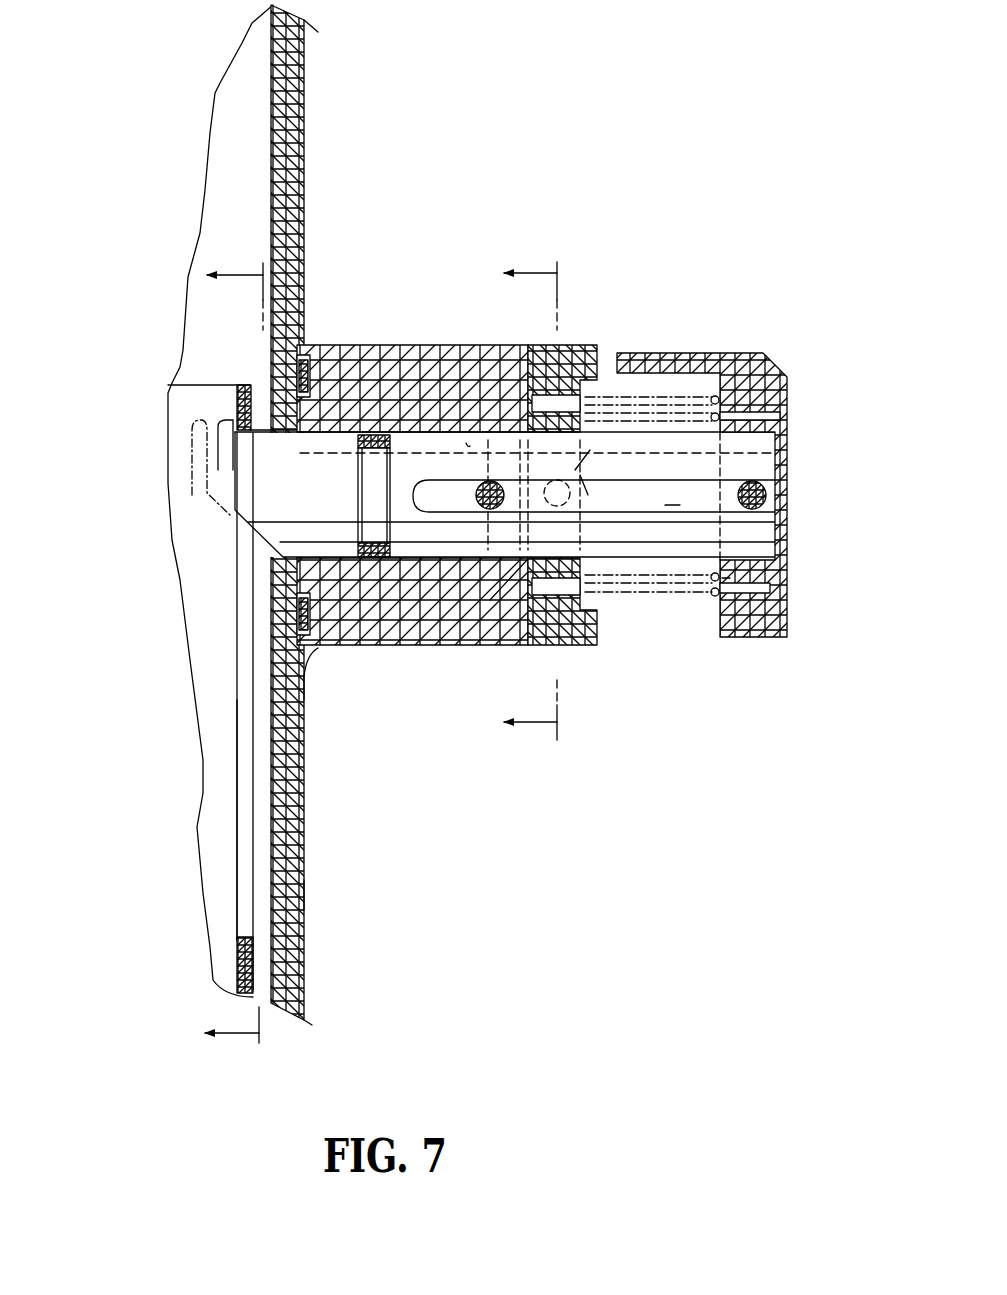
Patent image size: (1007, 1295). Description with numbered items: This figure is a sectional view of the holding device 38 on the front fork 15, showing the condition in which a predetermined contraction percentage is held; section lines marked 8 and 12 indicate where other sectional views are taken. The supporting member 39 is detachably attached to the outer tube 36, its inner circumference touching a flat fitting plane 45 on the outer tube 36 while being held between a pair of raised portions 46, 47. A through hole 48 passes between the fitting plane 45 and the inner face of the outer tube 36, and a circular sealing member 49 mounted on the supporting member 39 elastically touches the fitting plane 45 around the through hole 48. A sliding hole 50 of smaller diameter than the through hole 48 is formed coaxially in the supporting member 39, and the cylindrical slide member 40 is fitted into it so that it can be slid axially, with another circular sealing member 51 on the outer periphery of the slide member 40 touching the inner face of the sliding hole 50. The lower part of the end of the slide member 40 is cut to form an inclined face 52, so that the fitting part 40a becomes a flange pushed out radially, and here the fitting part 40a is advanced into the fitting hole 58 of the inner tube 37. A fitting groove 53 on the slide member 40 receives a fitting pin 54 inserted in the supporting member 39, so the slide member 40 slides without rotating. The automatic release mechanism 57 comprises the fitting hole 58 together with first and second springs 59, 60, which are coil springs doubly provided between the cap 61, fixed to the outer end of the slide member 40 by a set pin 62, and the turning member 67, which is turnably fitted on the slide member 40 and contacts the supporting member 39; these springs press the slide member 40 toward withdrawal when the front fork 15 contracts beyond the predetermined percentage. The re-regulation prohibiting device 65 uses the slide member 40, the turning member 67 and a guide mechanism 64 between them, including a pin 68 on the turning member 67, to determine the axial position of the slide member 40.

The front fork 15 is at (315, 895).
The outer tube 36 is at (300, 115).
The inner tube 37 is at (237, 960).
The holding device 38 is at (410, 655).
The supporting member 39 is at (430, 345).
The slide member 40 is at (415, 457).
The fitting part 40a is at (225, 462).
The fitting plane 45 is at (337, 340).
The raised portion 46 is at (318, 335).
The raised portion 47 is at (318, 648).
The through hole 48 is at (253, 563).
The circular sealing member 49 is at (280, 683).
The sliding hole 50 is at (467, 445).
The circular sealing member 51 is at (377, 556).
The inclined face 52 is at (255, 525).
The fitting groove 53 is at (673, 503).
The fitting pin 54 is at (477, 491).
The automatic release mechanism 57 is at (212, 412).
The fitting hole 58 is at (240, 768).
The first spring 59 is at (713, 396).
The second spring 60 is at (722, 578).
The cap 61 is at (787, 364).
The set pin 62 is at (768, 495).
The guide mechanism 64 is at (490, 600).
The re-regulation prohibiting device 65 is at (578, 465).
The turning member 67 is at (583, 345).
The pin 68 is at (580, 475).
The section line 8- 8 is at (229, 661).
The section line 12- 12 is at (521, 499).